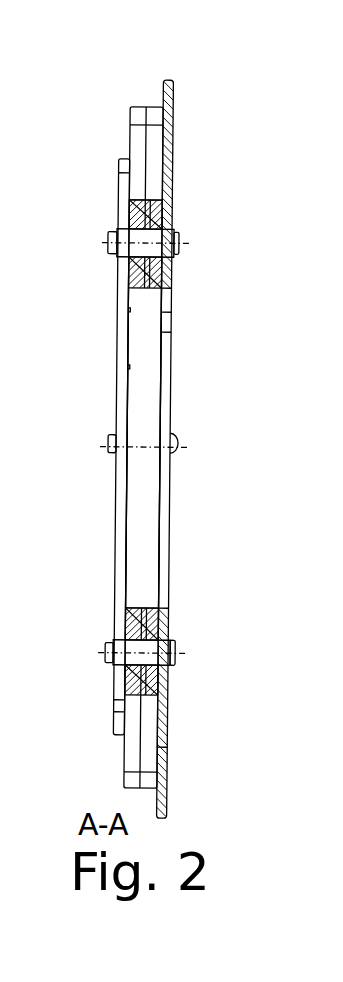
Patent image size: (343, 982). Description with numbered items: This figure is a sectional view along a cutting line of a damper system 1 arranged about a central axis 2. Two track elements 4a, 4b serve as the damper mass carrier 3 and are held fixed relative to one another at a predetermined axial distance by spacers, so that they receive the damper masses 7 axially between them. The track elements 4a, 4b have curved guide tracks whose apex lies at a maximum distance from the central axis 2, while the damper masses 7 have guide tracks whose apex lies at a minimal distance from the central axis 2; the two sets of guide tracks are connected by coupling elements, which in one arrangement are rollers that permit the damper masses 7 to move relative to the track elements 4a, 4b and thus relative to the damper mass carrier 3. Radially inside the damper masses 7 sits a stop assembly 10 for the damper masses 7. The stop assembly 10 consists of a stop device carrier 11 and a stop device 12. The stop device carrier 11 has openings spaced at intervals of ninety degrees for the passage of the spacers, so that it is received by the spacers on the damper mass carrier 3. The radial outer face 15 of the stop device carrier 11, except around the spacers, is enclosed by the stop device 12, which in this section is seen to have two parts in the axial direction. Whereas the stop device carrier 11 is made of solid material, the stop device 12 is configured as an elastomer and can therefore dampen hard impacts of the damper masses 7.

The damper system 1 is at (207, 157).
The central axis 2 is at (142, 448).
The damper mass carrier 3 is at (158, 747).
The track element 4a is at (118, 170).
The track element 4b is at (173, 100).
The damper mass 7 is at (140, 132).
The stop assembly 10 is at (148, 610).
The stop device carrier 11 is at (175, 288).
The stop device 12 is at (138, 207).
The radial outer face 15 is at (173, 657).